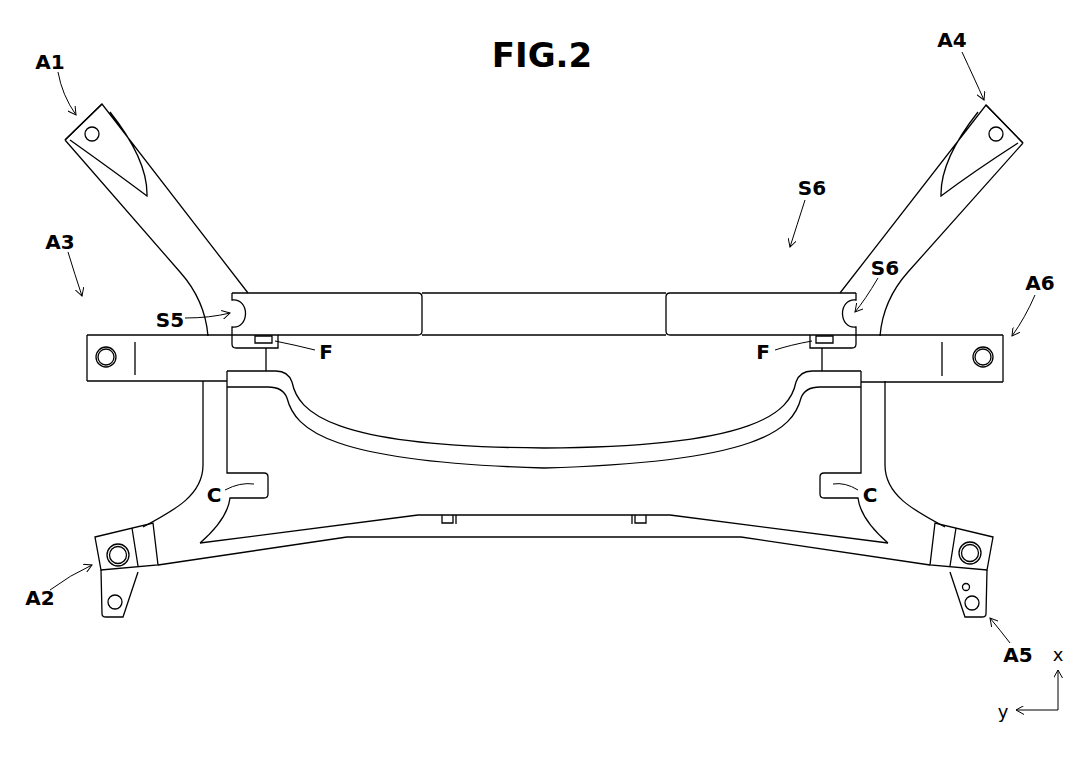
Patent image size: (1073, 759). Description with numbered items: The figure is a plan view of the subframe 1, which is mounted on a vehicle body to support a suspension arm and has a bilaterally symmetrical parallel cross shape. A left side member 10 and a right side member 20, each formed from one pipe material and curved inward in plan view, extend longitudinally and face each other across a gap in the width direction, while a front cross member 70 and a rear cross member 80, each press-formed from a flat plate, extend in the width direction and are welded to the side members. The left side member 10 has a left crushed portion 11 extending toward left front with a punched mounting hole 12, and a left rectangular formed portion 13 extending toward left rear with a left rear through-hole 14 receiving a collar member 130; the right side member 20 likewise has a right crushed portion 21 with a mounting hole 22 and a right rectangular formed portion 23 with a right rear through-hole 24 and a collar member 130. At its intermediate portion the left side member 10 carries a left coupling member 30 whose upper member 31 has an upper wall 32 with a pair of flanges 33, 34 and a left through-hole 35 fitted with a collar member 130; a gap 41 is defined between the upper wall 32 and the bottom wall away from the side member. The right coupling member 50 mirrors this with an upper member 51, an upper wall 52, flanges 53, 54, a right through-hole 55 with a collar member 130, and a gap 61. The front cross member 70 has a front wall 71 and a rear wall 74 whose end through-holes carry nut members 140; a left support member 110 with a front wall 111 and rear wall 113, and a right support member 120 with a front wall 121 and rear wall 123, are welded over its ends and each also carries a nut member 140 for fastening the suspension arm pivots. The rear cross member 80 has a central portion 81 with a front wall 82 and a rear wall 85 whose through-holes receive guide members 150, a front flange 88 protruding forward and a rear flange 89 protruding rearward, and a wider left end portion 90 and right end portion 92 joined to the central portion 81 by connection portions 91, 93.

The subframe 1 is at (640, 165).
The left side member 10 is at (205, 190).
The left crushed portion 11 is at (108, 96).
The mounting hole 12 is at (89, 142).
The left rectangular formed portion 13 is at (94, 524).
The left rear through-hole 14 is at (112, 566).
The right side member 20 is at (906, 184).
The right crushed portion 21 is at (1018, 112).
The mounting hole 22 is at (1003, 138).
The right rectangular formed portion 23 is at (990, 522).
The right rear through-hole 24 is at (978, 566).
The left coupling member 30 is at (129, 357).
The upper member 31 is at (76, 358).
The upper wall 32 is at (112, 382).
The flange 33 is at (124, 335).
The flange 34 is at (130, 385).
The left through-hole 35 is at (97, 363).
The gap 41 is at (282, 360).
The right coupling member 50 is at (961, 338).
The upper member 51 is at (1012, 355).
The upper wall 52 is at (935, 380).
The flange 53 is at (910, 336).
The flange 54 is at (906, 385).
The right through-hole 55 is at (989, 364).
The gap 61 is at (806, 360).
The front cross member 70 is at (544, 292).
The front wall 71 is at (512, 291).
The rear wall 74 is at (535, 337).
The rear cross member 80 is at (544, 579).
The central portion 81 is at (597, 546).
The front wall 82 is at (548, 467).
The rear wall 85 is at (542, 520).
The front flange 88 is at (500, 448).
The rear flange 89 is at (410, 521).
The left end portion 90 is at (255, 566).
The connection portion 91 is at (362, 546).
The right end portion 92 is at (880, 572).
The connection portion 93 is at (708, 546).
The left support member 110 is at (327, 298).
The front wall 111 is at (260, 293).
The rear wall 113 is at (385, 337).
The right support member 120 is at (761, 298).
The front wall 121 is at (770, 293).
The rear wall 123 is at (677, 337).
The collar member 130 is at (115, 360).
The nut member 140 is at (254, 342).
The guide member 150 is at (452, 525).